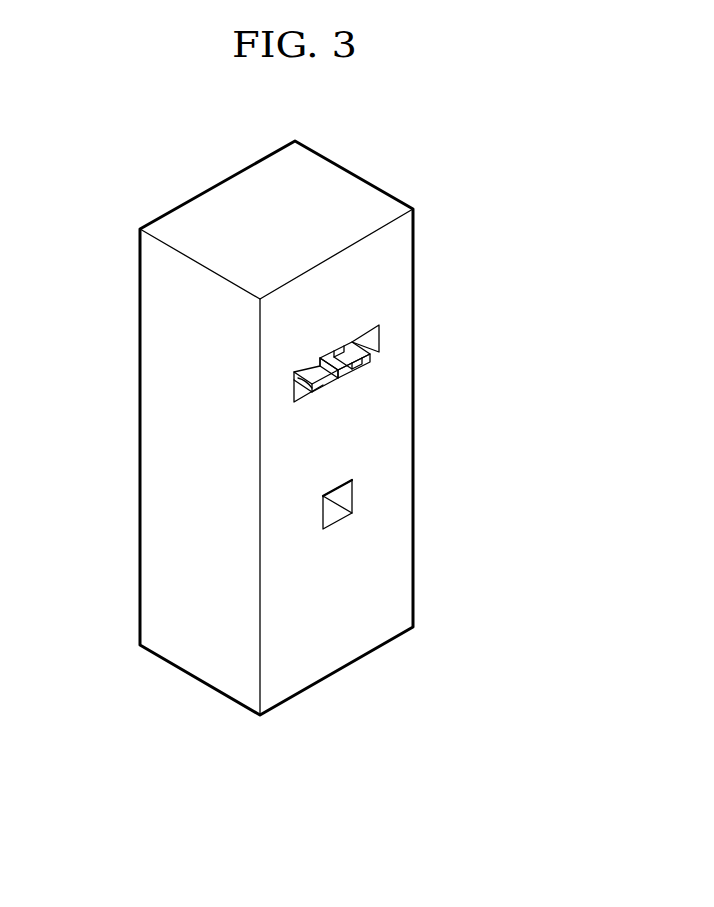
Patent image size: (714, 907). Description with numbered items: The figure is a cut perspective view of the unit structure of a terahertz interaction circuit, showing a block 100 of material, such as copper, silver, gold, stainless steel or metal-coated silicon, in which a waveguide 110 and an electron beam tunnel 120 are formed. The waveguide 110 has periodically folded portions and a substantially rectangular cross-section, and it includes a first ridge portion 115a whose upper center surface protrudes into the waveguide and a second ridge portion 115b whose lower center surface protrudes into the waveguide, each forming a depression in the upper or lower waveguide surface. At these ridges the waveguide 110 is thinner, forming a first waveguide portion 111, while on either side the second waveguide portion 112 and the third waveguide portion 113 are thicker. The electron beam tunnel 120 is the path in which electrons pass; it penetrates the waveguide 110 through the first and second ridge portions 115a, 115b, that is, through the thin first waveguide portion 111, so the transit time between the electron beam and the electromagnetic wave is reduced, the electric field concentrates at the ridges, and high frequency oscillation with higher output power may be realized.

The block 100 is at (340, 658).
The waveguide 110 is at (276, 294).
The first waveguide portion 111 is at (276, 273).
The second waveguide portion 112 is at (305, 388).
The third waveguide portion 113 is at (380, 353).
The first ridge portion 115a is at (335, 353).
The second ridge portion 115b is at (318, 360).
The electron beam tunnel 120 is at (350, 500).